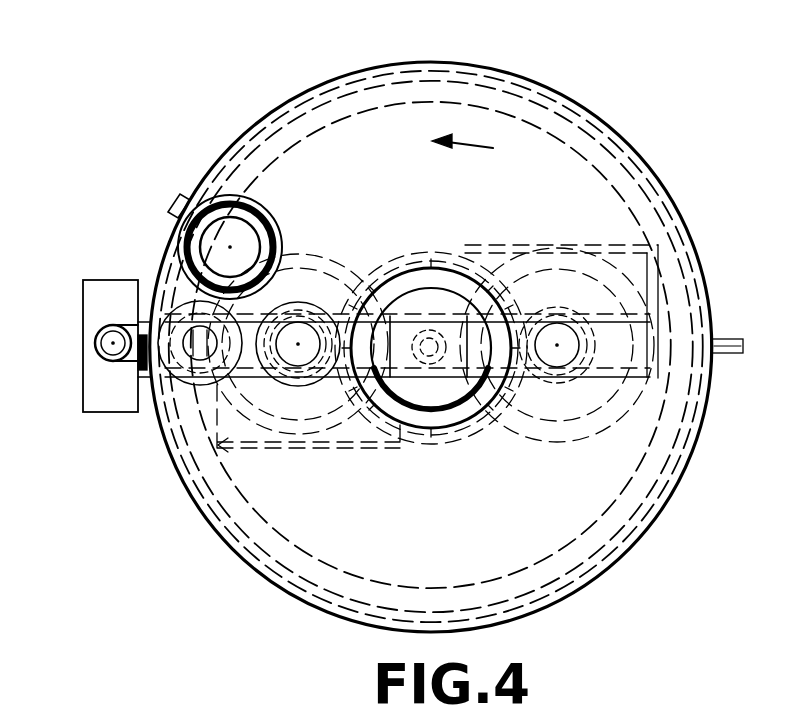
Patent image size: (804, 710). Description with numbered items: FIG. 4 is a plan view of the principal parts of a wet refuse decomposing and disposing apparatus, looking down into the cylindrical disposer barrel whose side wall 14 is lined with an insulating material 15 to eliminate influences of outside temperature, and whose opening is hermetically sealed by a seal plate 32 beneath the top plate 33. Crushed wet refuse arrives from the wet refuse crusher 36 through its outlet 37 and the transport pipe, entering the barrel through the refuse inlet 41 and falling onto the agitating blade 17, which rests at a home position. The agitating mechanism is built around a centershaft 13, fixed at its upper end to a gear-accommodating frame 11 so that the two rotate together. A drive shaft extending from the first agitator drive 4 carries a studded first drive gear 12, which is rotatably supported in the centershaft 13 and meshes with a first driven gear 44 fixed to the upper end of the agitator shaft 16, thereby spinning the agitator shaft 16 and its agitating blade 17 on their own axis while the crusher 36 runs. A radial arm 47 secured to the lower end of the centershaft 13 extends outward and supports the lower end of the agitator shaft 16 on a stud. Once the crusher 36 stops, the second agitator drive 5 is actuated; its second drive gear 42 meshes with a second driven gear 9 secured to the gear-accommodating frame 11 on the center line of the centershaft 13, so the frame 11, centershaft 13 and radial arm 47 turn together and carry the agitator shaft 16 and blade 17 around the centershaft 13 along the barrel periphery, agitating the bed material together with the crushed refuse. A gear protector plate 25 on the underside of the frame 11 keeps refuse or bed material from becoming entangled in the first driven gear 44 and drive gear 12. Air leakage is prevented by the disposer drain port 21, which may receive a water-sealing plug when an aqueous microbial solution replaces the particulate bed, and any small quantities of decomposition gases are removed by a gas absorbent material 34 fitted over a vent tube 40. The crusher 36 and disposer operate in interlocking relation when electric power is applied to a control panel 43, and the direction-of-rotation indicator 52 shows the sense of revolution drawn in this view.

The first agitator drive 4 is at (430, 280).
The second agitator drive 5 is at (330, 322).
The second driven gear 9 is at (452, 447).
The gear-accommodating frame 11 is at (615, 392).
The first drive gear 12 is at (407, 453).
The centershaft 13 is at (400, 445).
The side wall 14 is at (660, 528).
The insulating material 15 is at (605, 572).
The agitator shaft 16 is at (283, 312).
The agitating blade 17 is at (292, 462).
The disposer drain port 21 is at (743, 350).
The gear protector plate 25 is at (200, 464).
The seal plate 32 is at (399, 352).
The top plate 33 is at (288, 156).
The gas absorbent material 34 is at (213, 318).
The wet refuse crusher 36 is at (213, 203).
The outlet 37 is at (180, 210).
The vent tube 40 is at (153, 410).
The refuse inlet 41 is at (108, 358).
The second drive gear 42 is at (398, 262).
The control panel 43 is at (83, 378).
The first driven gear 44 is at (313, 300).
The radial arm 47 is at (250, 386).
The rotation direction arrow 52 is at (493, 148).